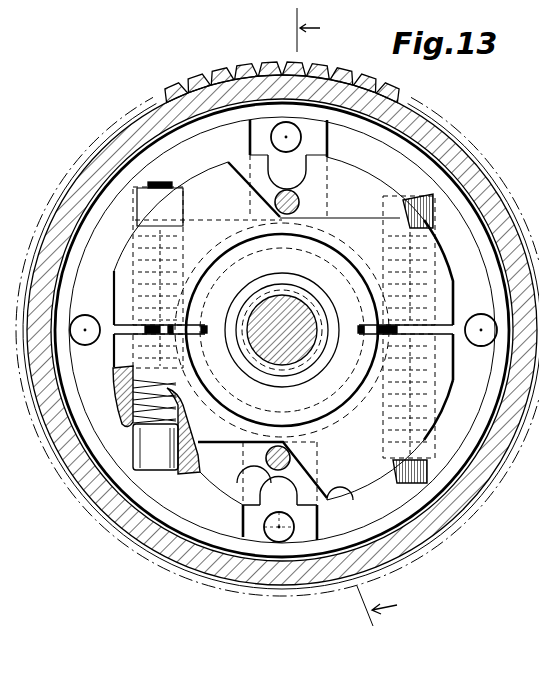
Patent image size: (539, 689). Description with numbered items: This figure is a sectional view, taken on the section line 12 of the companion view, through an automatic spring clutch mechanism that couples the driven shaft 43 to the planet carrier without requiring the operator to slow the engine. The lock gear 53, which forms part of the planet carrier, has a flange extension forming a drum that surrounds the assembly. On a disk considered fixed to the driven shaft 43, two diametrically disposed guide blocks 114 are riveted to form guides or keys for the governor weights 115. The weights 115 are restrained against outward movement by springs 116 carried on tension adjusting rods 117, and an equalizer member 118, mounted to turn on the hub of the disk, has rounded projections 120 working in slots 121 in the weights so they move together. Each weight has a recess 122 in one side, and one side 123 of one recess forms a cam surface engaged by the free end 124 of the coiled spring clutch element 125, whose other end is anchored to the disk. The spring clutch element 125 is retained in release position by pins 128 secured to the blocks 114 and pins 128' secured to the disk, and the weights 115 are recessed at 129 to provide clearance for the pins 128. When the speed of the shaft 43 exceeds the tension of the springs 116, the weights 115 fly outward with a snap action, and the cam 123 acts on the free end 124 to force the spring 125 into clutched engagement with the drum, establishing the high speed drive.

The lock gear 53 is at (218, 77).
The coiled spring clutch element 125 is at (161, 140).
The section line 12— 12 is at (327, 317).
The governor weights 115 is at (362, 187).
The guide blocks 114 is at (251, 148).
The pins 128 is at (280, 332).
The pins 128' is at (248, 325).
The recesses 129 is at (307, 179).
The recess 122 is at (308, 214).
The equalizer member 118 is at (351, 262).
The rounded projections 120 is at (131, 302).
The slots 121 is at (135, 263).
The springs 116 is at (118, 387).
The tension adjusting rods 117 is at (131, 415).
The driven shaft 43 is at (286, 346).
The free end 124 is at (300, 480).
The cam surface 123 is at (345, 491).